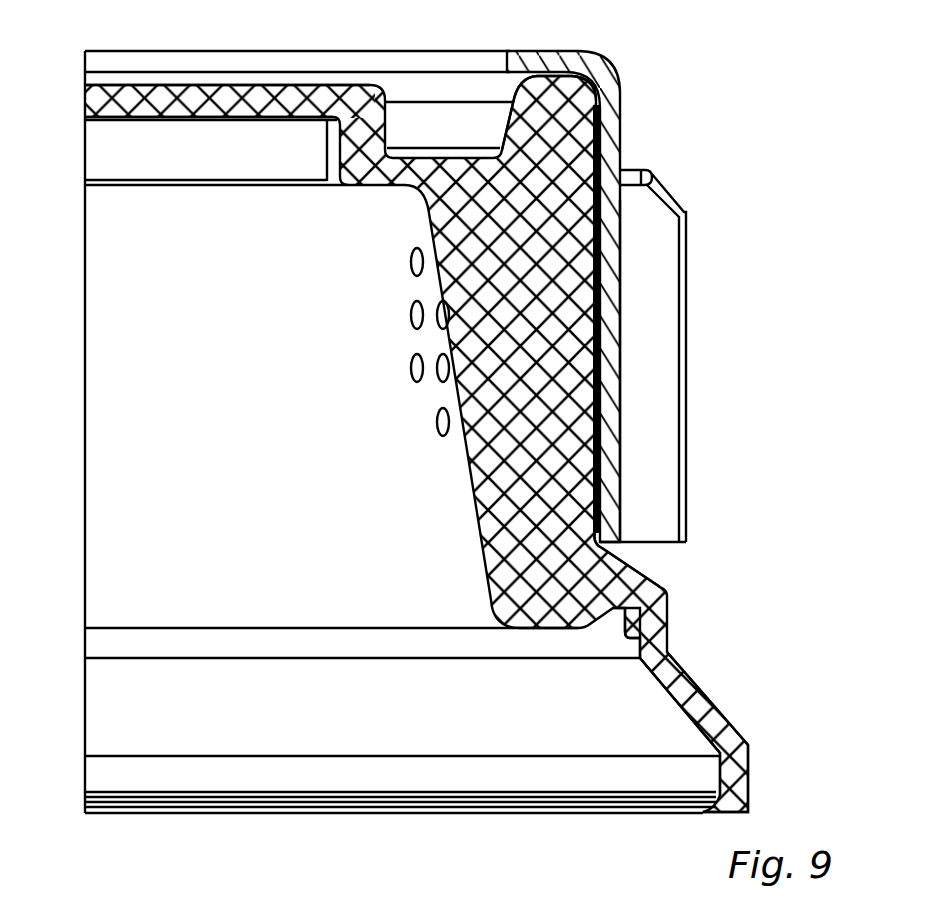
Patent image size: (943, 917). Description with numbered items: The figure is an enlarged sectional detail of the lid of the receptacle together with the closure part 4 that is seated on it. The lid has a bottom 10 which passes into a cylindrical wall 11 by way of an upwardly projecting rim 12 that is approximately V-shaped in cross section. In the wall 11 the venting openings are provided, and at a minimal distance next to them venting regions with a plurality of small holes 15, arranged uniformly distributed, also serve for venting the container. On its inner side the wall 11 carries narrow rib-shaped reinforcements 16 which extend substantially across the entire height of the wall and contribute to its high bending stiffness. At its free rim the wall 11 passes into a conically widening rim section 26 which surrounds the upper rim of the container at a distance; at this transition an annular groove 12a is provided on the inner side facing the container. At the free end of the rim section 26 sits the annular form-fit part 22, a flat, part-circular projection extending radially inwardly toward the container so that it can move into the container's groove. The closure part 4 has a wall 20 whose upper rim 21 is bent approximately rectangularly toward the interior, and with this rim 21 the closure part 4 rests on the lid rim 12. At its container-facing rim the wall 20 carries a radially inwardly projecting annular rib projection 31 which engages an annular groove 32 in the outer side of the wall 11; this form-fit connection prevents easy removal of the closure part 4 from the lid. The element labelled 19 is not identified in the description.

The closure part 4 is at (611, 391).
The bottom 10 is at (227, 88).
The cylindrical wall 11 is at (100, 561).
The rim 12 is at (558, 122).
The annular groove 12a is at (640, 633).
The small holes 15 is at (437, 422).
The rib-shaped reinforcements 16 is at (558, 327).
The flange 19 is at (623, 157).
The wall 20 is at (606, 463).
The rim 21 is at (515, 65).
The form-fit part 22 is at (698, 813).
The rim section 26 is at (710, 695).
The annular rib projection 31 is at (599, 542).
The annular groove 32 is at (590, 528).